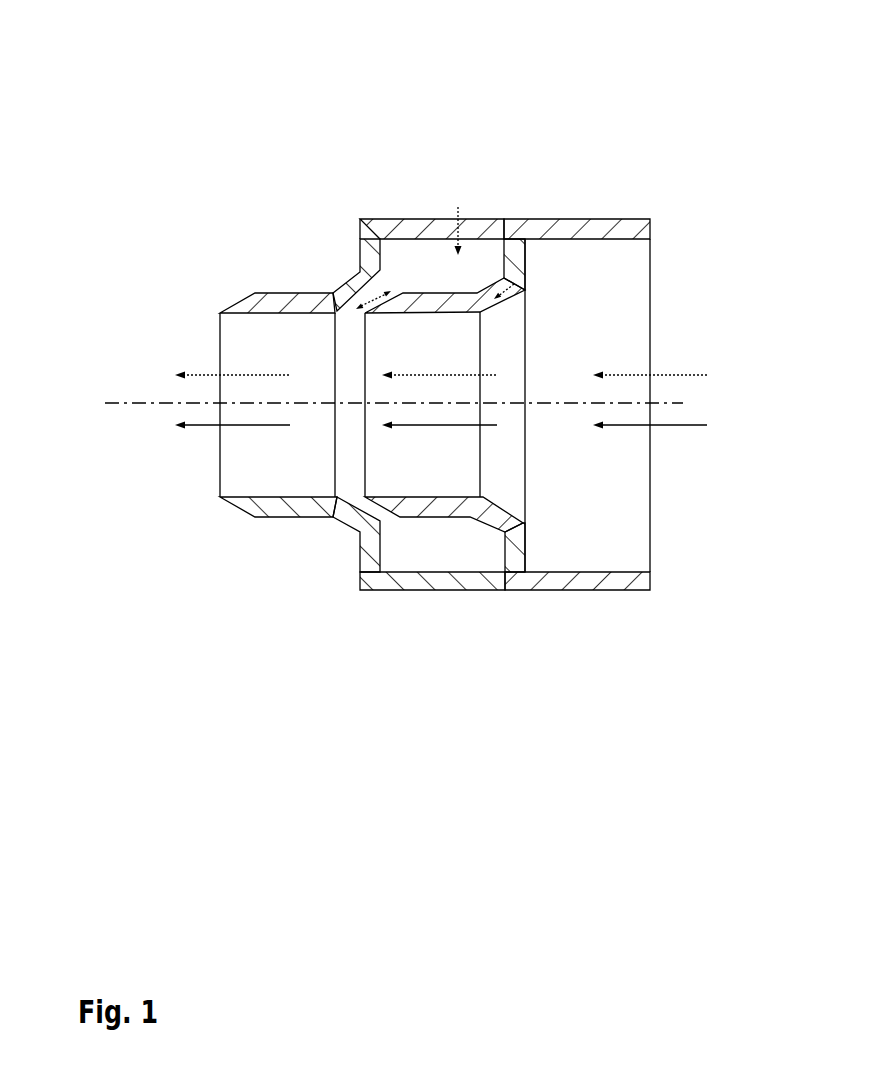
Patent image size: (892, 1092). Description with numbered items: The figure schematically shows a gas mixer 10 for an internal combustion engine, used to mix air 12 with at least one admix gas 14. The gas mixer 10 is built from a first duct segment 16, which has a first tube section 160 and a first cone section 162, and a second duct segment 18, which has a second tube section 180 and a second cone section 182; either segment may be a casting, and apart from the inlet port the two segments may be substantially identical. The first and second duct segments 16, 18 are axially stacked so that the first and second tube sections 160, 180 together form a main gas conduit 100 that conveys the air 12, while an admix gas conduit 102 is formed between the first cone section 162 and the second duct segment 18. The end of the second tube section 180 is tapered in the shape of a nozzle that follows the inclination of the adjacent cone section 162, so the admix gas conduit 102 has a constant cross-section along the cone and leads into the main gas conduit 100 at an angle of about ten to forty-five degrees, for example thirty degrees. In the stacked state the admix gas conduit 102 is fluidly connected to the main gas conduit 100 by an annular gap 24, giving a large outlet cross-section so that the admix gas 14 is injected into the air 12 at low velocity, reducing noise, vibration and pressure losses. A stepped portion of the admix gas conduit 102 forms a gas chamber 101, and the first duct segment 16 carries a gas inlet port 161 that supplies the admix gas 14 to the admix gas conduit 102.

The gas mixer 10 is at (493, 105).
The air 12 is at (670, 375).
The admix gas 14 is at (459, 207).
The first duct segment 16 is at (360, 222).
The second duct segment 18 is at (609, 220).
The annular gap 24 is at (346, 318).
The main gas conduit 100 is at (299, 462).
The gas chamber 101 is at (480, 276).
The admix gas conduit 102 is at (391, 283).
The first tube section 160 is at (272, 297).
The gas inlet port 161 is at (449, 220).
The first cone section 162 is at (335, 292).
The second tube section 180 is at (437, 508).
The second cone section 182 is at (493, 515).